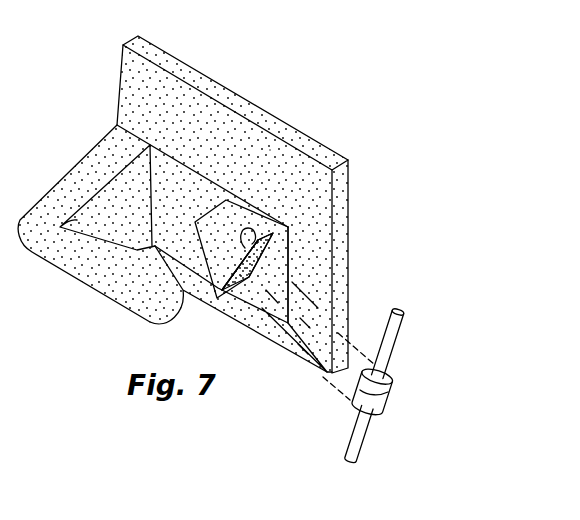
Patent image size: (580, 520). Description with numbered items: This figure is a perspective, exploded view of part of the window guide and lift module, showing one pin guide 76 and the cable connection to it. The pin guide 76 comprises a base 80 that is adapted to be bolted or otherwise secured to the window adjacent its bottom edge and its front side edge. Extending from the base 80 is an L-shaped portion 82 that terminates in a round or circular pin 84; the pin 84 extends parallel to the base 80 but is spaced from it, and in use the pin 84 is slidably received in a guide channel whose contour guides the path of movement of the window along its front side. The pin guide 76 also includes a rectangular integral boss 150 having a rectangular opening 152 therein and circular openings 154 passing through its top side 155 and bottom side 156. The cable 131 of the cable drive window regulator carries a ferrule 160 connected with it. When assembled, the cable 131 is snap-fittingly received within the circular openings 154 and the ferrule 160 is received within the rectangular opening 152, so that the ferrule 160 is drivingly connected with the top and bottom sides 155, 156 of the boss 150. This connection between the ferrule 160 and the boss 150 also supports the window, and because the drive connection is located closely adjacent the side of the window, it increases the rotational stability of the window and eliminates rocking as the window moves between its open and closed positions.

The pin guide 76 is at (216, 80).
The base 80 is at (268, 147).
The L-shaped portion 82 is at (87, 157).
The pin 84 is at (88, 275).
The boss 150 is at (222, 207).
The rectangular opening 152 is at (268, 267).
The circular openings 154 is at (290, 228).
The top side 155 is at (264, 231).
The bottom side 156 is at (226, 300).
The cable 131 is at (399, 306).
The ferrule 160 is at (380, 395).